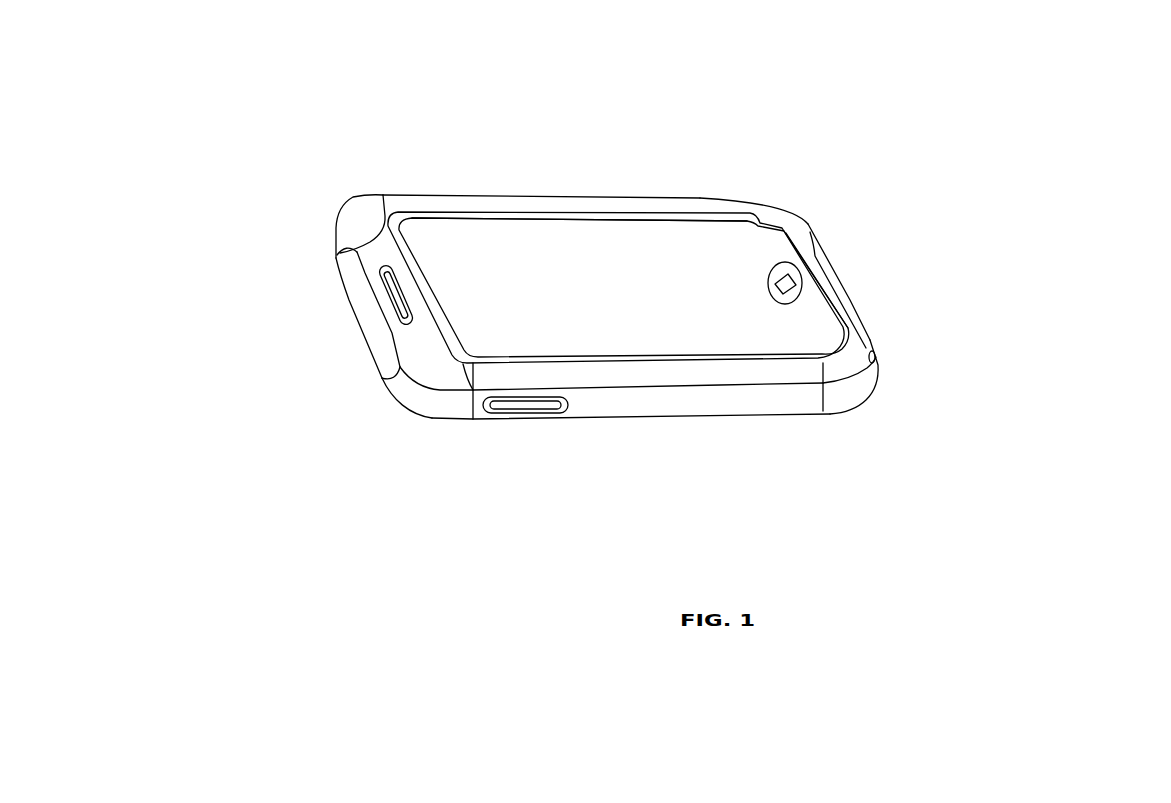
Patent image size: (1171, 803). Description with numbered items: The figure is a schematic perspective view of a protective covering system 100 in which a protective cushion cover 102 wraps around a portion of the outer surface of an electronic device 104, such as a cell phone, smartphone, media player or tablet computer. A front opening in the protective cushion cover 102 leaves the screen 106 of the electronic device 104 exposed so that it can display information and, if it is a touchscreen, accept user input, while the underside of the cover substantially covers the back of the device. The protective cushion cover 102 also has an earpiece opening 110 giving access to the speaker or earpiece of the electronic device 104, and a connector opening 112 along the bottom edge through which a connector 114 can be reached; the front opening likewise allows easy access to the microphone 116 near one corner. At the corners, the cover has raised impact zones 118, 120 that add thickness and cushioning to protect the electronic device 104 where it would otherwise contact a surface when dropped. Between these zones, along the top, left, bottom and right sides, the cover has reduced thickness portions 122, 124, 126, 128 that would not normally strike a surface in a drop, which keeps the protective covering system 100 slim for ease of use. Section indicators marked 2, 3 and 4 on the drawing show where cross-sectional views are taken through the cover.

The protective covering system 100 is at (856, 63).
The protective cushion cover 102 is at (402, 178).
The electronic device 104 is at (470, 218).
The screen 106 is at (672, 345).
The earpiece opening 110 is at (393, 300).
The connector opening 112 is at (565, 405).
The connector 114 is at (518, 408).
The microphone 116 is at (876, 362).
The raised impact zone 118 is at (340, 190).
The raised impact zone 120 is at (789, 192).
The reduced thickness portion 122 is at (579, 194).
The reduced thickness portion 124 is at (345, 266).
The reduced thickness portion 126 is at (742, 407).
The reduced thickness portion 128 is at (853, 303).
The section line 2- 2 is at (368, 385).
The section line 3- 3 is at (338, 318).
The section line 4- 4 is at (703, 190).